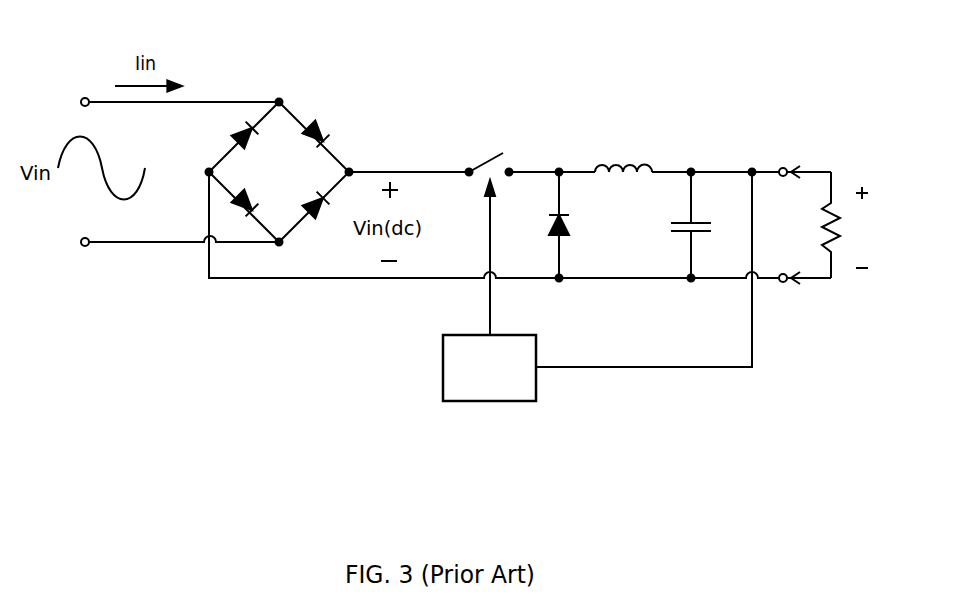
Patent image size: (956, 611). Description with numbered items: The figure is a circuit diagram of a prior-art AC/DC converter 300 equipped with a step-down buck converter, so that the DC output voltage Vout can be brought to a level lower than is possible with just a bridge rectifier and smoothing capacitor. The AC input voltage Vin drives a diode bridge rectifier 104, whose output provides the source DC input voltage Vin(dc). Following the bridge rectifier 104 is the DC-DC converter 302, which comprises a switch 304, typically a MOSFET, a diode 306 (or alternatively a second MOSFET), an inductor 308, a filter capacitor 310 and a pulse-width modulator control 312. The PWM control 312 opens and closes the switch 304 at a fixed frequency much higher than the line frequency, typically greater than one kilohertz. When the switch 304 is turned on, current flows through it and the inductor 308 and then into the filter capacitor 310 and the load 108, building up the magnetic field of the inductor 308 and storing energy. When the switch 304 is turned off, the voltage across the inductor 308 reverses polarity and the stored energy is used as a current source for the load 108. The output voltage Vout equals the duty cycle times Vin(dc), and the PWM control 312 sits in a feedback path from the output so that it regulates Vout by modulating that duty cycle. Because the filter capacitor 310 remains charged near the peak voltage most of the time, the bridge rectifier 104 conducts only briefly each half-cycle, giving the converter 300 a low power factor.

The AC/DC converter 300 is at (95, 332).
The bridge rectifier 104 is at (363, 63).
The DC-DC converter 302 is at (759, 63).
The switch 304 is at (489, 149).
The diode 306 is at (539, 225).
The inductor 308 is at (623, 154).
The filter capacitor 310 is at (672, 225).
The PWM control 312 is at (581, 285).
The load 108 is at (837, 225).